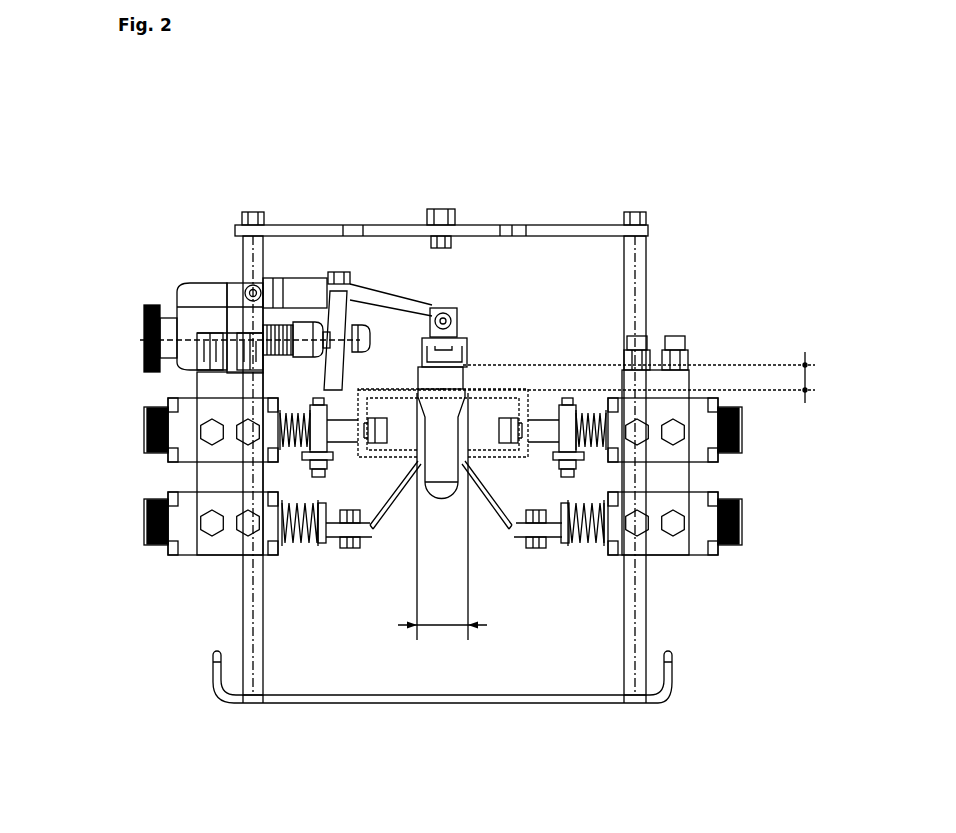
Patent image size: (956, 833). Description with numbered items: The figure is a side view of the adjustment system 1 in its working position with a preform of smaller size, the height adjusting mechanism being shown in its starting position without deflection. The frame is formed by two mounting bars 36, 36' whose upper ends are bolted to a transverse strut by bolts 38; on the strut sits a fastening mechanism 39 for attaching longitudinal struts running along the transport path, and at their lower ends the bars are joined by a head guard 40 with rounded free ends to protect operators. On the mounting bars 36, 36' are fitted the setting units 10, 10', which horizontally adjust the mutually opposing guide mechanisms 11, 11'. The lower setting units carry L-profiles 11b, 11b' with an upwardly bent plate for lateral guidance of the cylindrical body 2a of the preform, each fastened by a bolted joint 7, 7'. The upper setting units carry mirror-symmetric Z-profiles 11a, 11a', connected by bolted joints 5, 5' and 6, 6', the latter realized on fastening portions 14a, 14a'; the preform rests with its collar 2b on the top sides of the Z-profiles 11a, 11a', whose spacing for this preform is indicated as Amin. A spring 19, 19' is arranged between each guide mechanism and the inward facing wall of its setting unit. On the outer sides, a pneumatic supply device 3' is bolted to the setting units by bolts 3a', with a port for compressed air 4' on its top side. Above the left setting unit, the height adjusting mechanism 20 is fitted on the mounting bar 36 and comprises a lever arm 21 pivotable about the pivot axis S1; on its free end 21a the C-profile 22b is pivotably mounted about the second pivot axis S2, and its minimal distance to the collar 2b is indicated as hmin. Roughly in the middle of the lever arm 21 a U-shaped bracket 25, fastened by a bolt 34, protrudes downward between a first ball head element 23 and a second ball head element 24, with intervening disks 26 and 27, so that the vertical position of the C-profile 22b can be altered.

The adjustment system 1 is at (387, 104).
The cylindrical body 2a is at (442, 492).
The collar 2b is at (418, 394).
The pneumatic supply device 3' is at (663, 493).
The bolt 3a' is at (688, 506).
The port for compressed air 4' is at (670, 323).
The bolted joint 5 is at (196, 463).
The bolted joint 5' is at (688, 482).
The bolted joint 6 is at (369, 455).
The bolted joint 6' is at (499, 440).
The bolted joint 7 is at (339, 555).
The bolted joint 7' is at (547, 557).
The setting unit 10 is at (96, 481).
The setting unit 10' is at (779, 482).
The guide mechanism 11 is at (302, 604).
The guide mechanism 11' is at (522, 637).
The Z-profile 11a is at (401, 423).
The Z-profile 11a' is at (516, 397).
The L-profile 11b is at (373, 526).
The L-profile 11b' is at (512, 529).
The fastening portion 14a is at (326, 445).
The fastening portion 14a' is at (554, 446).
The spring 19 is at (384, 551).
The spring 19' is at (598, 660).
The height adjusting mechanism 20 is at (115, 352).
The lever arm 21 is at (383, 288).
The free end 21a is at (452, 312).
The C-profile 22b is at (467, 352).
The first ball head element 23 is at (300, 349).
The second ball head element 24 is at (369, 335).
The U-shaped bracket 25 is at (327, 327).
The disk 26 is at (348, 326).
The disk 27 is at (323, 324).
The bolt 34 is at (342, 270).
The mounting bar 36 is at (224, 465).
The mounting bar 36' is at (663, 464).
The bolt 38 is at (250, 212).
The fastening mechanism 39 is at (443, 208).
The head guard 40 is at (665, 700).
The pivot axis S1 is at (250, 290).
The pivot axis S2 is at (451, 320).
The minimum distance hmin is at (801, 357).
The minimum distance Amin is at (434, 527).